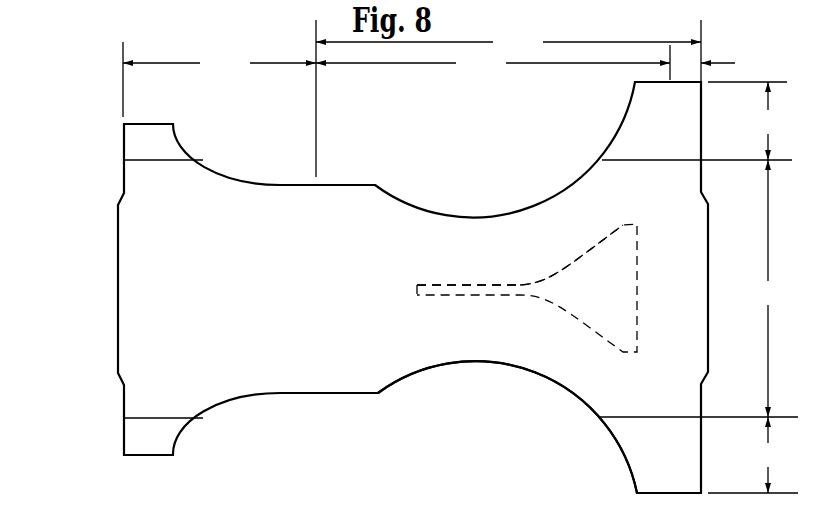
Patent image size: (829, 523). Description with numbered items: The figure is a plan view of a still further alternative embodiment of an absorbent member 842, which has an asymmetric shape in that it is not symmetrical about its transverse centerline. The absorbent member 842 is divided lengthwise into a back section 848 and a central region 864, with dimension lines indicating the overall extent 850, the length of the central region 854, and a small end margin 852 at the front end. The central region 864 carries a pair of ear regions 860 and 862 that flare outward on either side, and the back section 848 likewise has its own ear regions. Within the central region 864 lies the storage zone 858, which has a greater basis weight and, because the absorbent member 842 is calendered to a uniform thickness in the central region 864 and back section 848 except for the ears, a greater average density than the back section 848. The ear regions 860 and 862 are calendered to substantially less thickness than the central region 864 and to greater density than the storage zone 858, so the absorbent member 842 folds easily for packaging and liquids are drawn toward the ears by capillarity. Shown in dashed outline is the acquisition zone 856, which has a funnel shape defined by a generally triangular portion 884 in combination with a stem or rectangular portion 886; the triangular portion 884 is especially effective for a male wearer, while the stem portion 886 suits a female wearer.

The absorbent member 842 is at (120, 190).
The back section 848 is at (219, 98).
The overall length dimension 850 is at (508, 51).
The end margin width 852 is at (685, 62).
The central panel length 854 is at (493, 62).
The acquisition zone 856 is at (580, 298).
The storage zone 858 is at (527, 345).
The ear region 860 is at (770, 121).
The ear region 862 is at (770, 455).
The central region 864 is at (770, 288).
The triangular portion 884 is at (580, 260).
The stem portion 886 is at (447, 284).